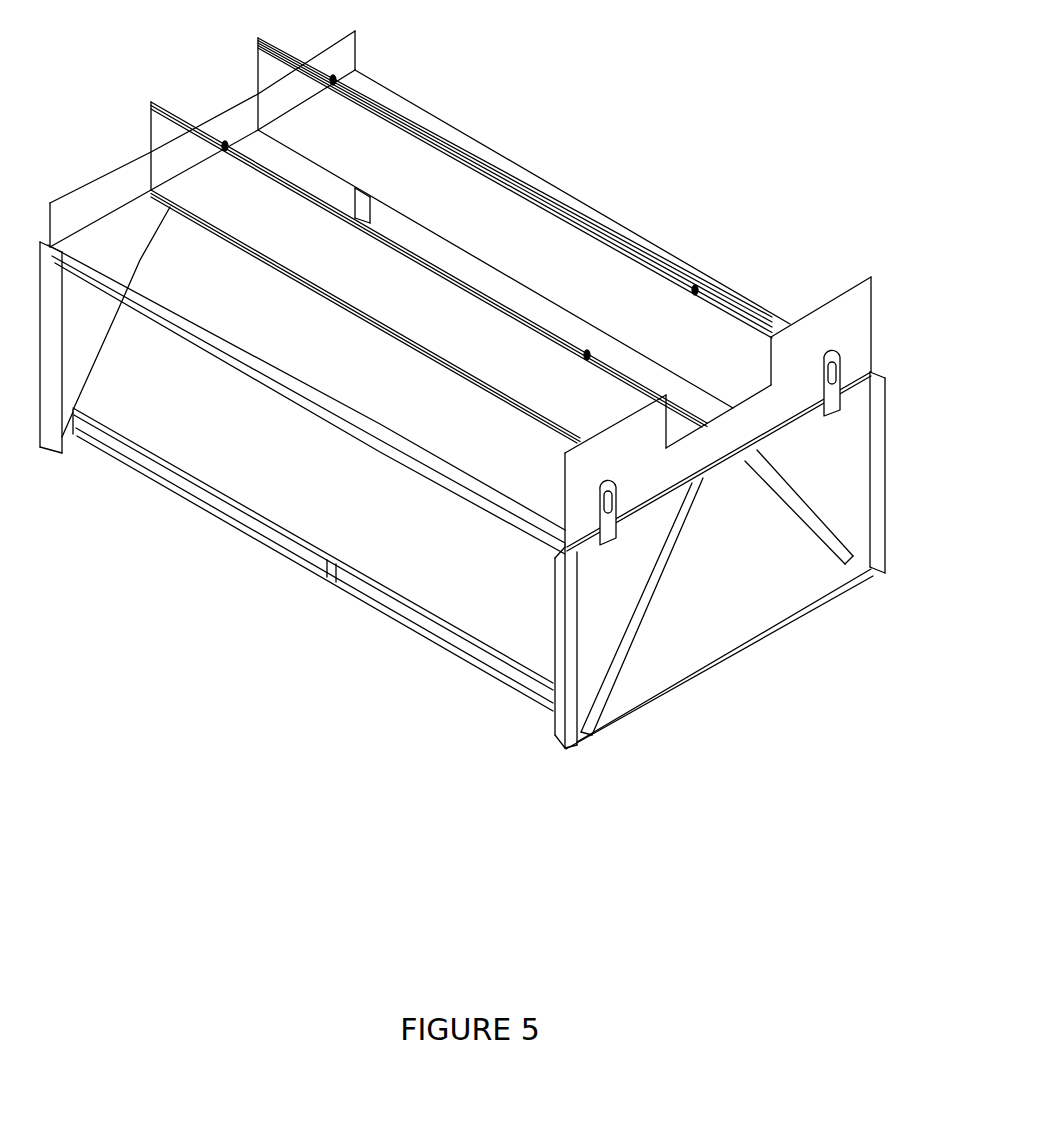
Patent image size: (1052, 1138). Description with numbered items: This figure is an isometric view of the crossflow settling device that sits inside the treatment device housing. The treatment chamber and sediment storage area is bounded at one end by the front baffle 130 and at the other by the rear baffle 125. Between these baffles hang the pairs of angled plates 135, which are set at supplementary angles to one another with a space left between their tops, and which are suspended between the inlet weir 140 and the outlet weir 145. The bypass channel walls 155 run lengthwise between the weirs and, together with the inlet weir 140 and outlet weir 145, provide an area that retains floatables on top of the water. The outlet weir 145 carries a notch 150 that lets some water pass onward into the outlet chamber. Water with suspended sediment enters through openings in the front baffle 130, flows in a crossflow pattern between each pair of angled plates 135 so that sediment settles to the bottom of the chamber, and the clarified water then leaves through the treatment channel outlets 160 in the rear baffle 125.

The rear baffle 125 is at (711, 591).
The front baffle 130 is at (62, 331).
The pairs of angled plates 135 is at (322, 501).
The inlet weir 140 is at (88, 201).
The outlet weir 145 is at (609, 459).
The notch 150 is at (776, 385).
The bypass channel walls 155 is at (480, 235).
The treatment channel outlets 160 is at (646, 626).